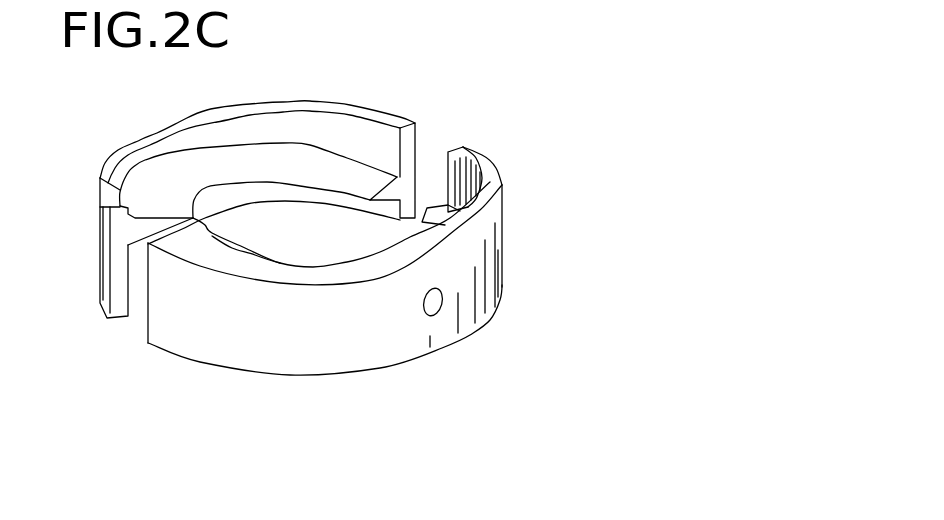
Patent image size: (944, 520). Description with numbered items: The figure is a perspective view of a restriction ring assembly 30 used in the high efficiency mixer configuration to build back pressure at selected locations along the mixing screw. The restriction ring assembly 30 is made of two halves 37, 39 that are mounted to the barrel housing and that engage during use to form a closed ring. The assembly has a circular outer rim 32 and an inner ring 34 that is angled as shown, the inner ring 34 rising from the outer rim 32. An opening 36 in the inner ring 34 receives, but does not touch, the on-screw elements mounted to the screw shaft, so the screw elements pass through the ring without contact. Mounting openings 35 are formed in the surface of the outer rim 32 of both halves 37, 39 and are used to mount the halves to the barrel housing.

The restriction ring assembly 30 is at (493, 322).
The circular outer rim 32 is at (500, 255).
The inner ring 34 is at (155, 190).
The mounting openings 35 is at (430, 316).
The opening 36 is at (333, 232).
The half 37 is at (212, 236).
The half 39 is at (410, 147).